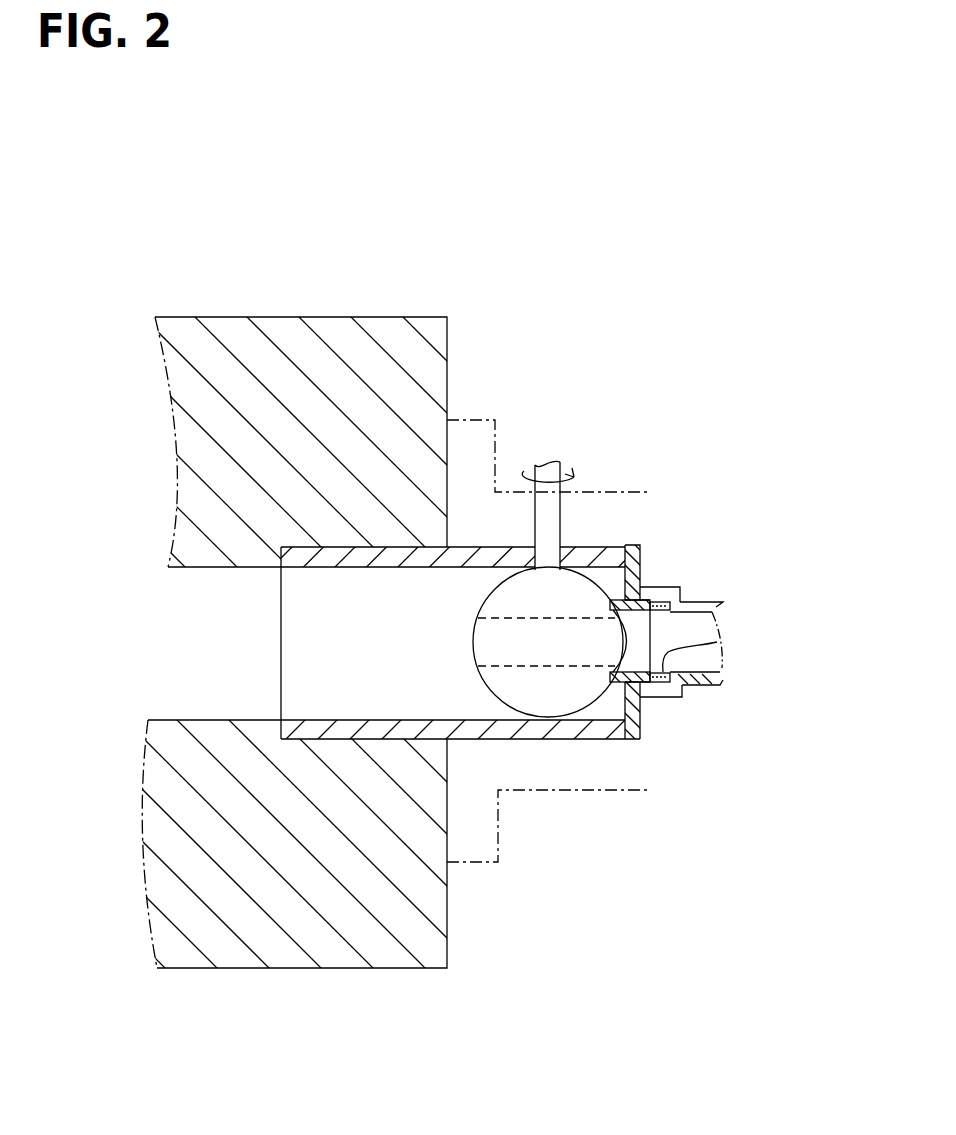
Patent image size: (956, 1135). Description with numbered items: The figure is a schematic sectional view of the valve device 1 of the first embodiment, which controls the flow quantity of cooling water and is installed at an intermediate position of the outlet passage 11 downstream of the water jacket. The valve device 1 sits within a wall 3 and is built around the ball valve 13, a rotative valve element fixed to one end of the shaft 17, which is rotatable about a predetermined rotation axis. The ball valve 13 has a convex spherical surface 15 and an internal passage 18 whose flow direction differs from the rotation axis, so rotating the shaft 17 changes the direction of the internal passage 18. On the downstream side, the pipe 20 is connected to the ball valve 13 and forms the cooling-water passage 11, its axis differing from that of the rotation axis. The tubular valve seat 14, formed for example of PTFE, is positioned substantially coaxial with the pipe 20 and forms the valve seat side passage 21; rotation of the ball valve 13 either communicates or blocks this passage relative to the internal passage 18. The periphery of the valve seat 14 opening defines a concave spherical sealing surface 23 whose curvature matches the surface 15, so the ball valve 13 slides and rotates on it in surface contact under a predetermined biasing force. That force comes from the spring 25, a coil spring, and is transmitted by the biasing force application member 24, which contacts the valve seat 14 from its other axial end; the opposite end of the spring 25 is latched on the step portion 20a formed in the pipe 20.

The valve device 1 is at (641, 536).
The wall 3 is at (444, 341).
The outlet passage 11 is at (477, 705).
The ball valve 13 is at (585, 685).
The valve seat 14 is at (627, 600).
The surface 15 is at (623, 737).
The shaft 17 is at (553, 527).
The internal passage 18 is at (553, 652).
The pipe 20 is at (683, 687).
The step portion 20a is at (717, 642).
The valve seat side passage 21 is at (630, 637).
The spherical sealing surface 23 is at (643, 567).
The biasing force application member 24 is at (620, 683).
The spring 25 is at (648, 686).